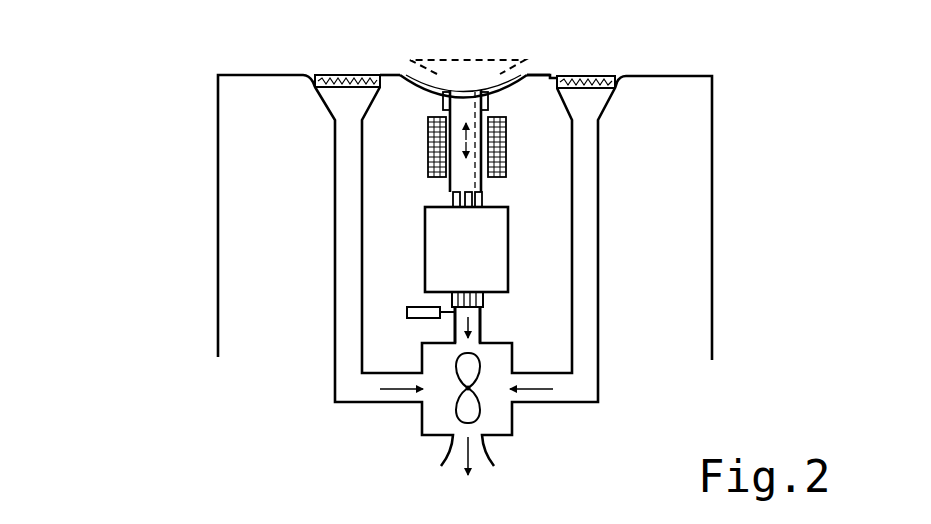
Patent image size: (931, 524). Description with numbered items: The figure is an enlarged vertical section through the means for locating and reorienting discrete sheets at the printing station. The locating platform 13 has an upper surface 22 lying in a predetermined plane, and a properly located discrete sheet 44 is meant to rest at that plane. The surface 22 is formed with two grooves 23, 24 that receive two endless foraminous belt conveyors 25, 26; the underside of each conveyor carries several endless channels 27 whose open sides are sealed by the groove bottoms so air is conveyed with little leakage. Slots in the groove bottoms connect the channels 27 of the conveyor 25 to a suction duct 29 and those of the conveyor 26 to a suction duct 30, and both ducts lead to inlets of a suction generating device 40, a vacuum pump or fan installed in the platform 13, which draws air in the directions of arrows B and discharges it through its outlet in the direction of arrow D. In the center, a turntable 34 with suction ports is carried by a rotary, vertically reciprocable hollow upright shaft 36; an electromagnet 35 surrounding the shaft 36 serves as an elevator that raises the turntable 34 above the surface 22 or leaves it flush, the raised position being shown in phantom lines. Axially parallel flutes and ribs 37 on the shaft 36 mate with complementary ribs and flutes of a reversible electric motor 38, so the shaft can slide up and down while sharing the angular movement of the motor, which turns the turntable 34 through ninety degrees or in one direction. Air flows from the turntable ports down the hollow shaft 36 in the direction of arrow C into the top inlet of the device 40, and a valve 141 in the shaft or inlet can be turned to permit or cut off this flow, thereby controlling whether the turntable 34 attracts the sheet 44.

The locating platform 13 is at (200, 245).
The upper surface 22 is at (542, 74).
The groove 23 is at (303, 75).
The groove 24 is at (643, 76).
The endless foraminous belt conveyor 25 is at (340, 82).
The endless foraminous belt conveyor 26 is at (588, 76).
The endless channel 27 is at (340, 82).
The suction duct 29 is at (347, 302).
The suction duct 30 is at (592, 317).
The turntable 34 is at (438, 80).
The electromagnet 35 is at (507, 140).
The upright shaft 36 is at (463, 117).
The flutes and ribs 37 is at (450, 200).
The reversible electric motor 38 is at (500, 258).
The valve 141 is at (483, 313).
The discrete sheet 44 is at (482, 338).
The suction generating device 40 is at (457, 415).
The air flow direction arrows B is at (395, 390).
The air flow direction arrow C is at (472, 317).
The discharge direction arrow D is at (470, 473).